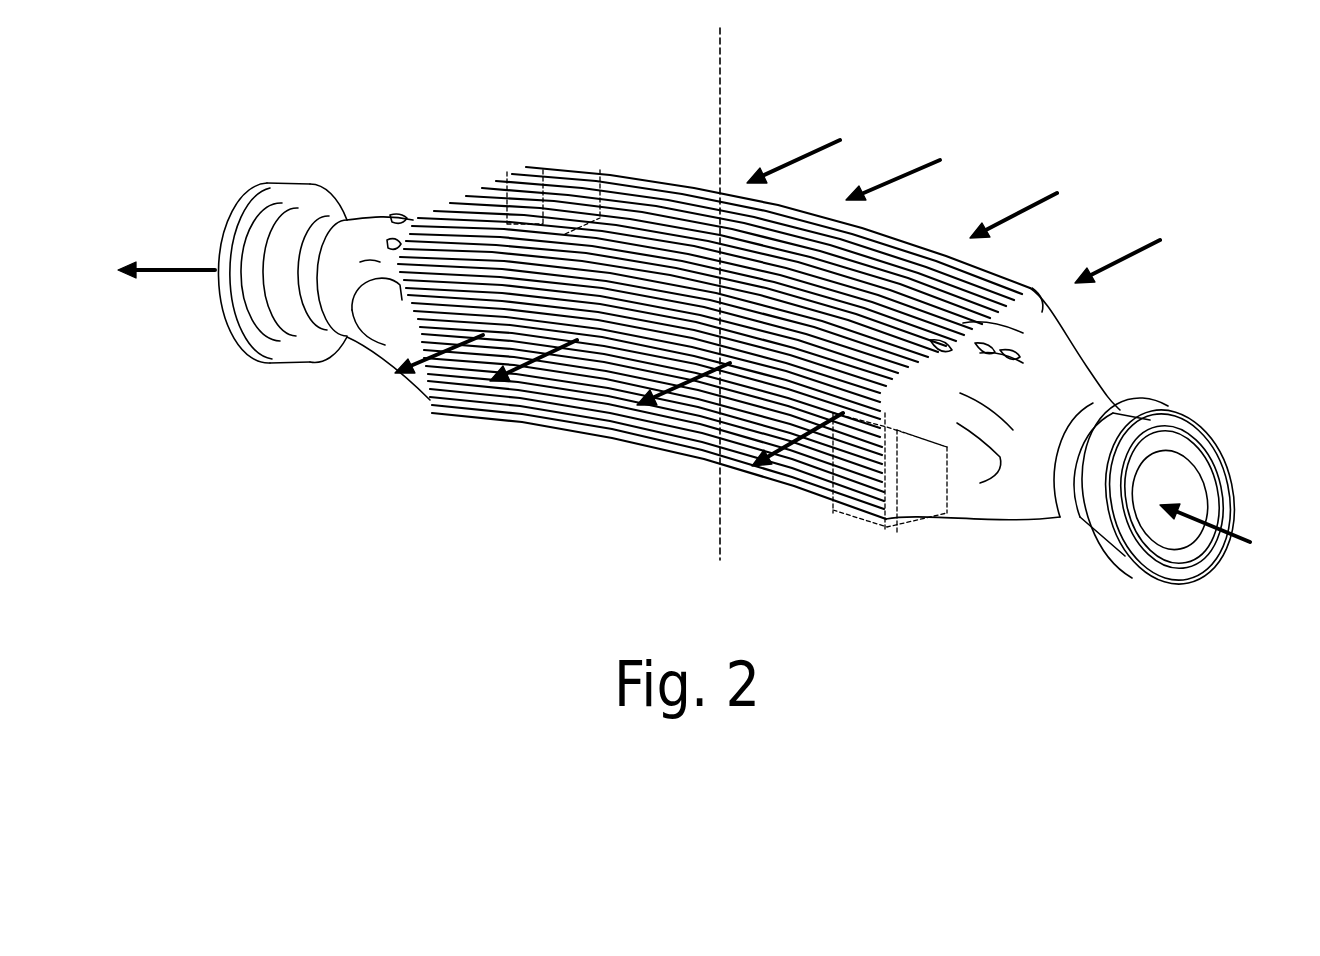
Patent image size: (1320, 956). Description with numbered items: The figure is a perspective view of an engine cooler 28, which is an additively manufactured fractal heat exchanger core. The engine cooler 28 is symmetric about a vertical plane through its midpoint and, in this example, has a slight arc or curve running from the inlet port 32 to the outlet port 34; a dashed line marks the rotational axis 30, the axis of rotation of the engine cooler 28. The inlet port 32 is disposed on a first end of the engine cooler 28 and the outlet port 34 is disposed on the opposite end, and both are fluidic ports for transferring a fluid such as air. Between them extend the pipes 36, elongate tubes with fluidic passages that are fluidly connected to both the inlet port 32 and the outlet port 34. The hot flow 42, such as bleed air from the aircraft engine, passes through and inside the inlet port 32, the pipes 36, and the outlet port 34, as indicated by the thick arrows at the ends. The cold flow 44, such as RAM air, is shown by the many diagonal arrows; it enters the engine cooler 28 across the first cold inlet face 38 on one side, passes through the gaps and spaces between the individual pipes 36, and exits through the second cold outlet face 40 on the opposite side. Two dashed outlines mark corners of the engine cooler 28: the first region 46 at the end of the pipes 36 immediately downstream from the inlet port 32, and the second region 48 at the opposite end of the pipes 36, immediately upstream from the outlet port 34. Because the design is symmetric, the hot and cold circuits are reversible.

The engine cooler 28 is at (475, 118).
The rotational axis 30 is at (718, 58).
The inlet port 32 is at (1195, 410).
The outlet port 34 is at (272, 185).
The pipes 36 is at (648, 172).
The first cold inlet face 38 is at (918, 248).
The second cold outlet face 40 is at (578, 407).
The hot flow 42 is at (172, 270).
The cold flow 44 is at (813, 143).
The first region 46 is at (887, 530).
The second region 48 is at (565, 168).